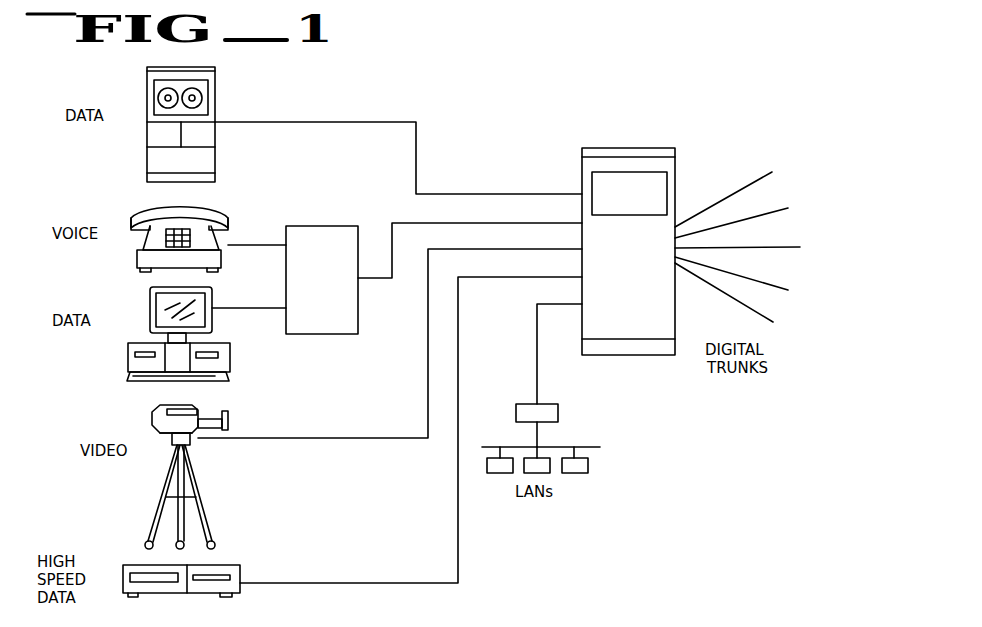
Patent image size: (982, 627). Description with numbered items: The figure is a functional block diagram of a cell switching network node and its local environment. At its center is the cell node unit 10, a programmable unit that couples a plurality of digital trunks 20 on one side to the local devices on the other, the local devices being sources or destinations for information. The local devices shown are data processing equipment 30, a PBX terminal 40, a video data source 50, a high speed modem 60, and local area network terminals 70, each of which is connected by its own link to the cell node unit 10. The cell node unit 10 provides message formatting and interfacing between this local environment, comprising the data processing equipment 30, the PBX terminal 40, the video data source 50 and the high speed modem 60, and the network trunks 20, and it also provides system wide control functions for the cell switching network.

The cell node unit 10 is at (657, 147).
The digital trunks 20 is at (726, 197).
The data processing equipment 30 is at (215, 86).
The PBX terminal 40 is at (331, 225).
The video data source 50 is at (230, 419).
The high speed modem 60 is at (242, 572).
The local area network (LAN) terminals 70 is at (559, 414).